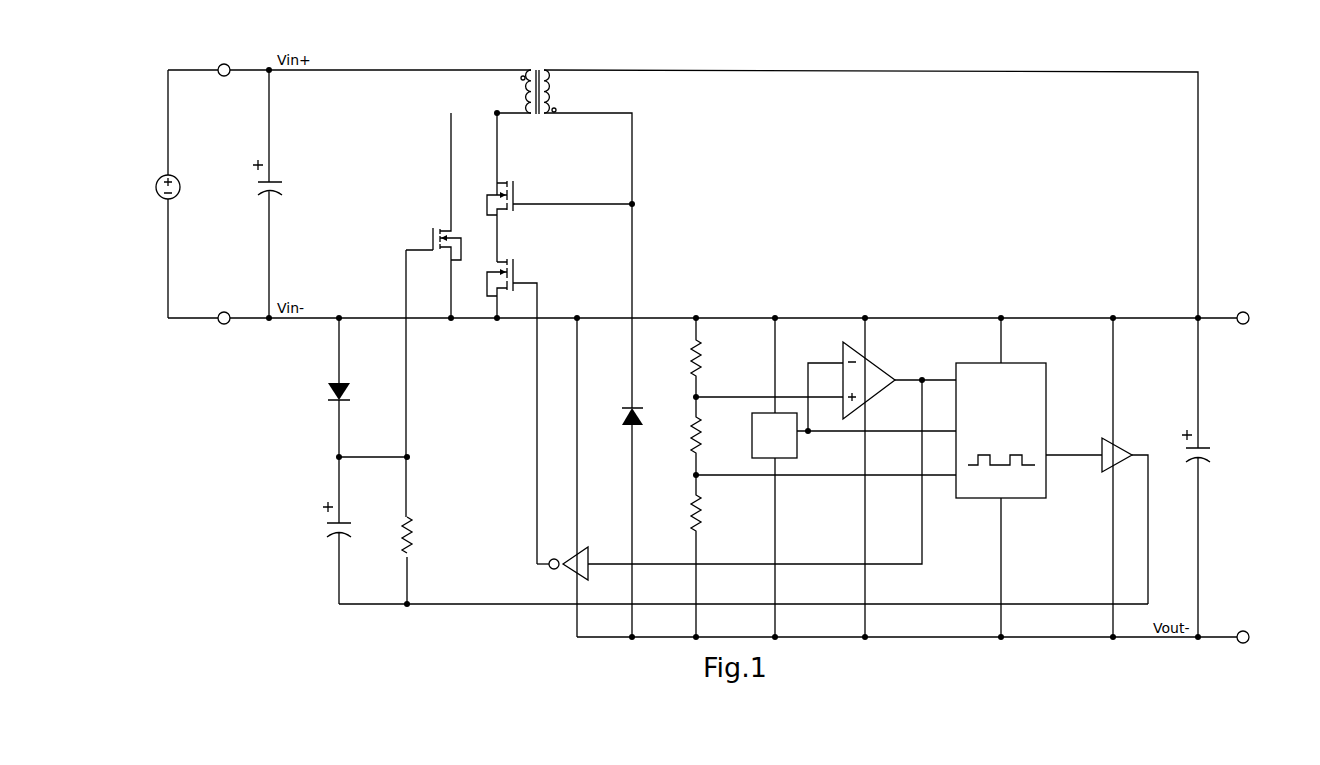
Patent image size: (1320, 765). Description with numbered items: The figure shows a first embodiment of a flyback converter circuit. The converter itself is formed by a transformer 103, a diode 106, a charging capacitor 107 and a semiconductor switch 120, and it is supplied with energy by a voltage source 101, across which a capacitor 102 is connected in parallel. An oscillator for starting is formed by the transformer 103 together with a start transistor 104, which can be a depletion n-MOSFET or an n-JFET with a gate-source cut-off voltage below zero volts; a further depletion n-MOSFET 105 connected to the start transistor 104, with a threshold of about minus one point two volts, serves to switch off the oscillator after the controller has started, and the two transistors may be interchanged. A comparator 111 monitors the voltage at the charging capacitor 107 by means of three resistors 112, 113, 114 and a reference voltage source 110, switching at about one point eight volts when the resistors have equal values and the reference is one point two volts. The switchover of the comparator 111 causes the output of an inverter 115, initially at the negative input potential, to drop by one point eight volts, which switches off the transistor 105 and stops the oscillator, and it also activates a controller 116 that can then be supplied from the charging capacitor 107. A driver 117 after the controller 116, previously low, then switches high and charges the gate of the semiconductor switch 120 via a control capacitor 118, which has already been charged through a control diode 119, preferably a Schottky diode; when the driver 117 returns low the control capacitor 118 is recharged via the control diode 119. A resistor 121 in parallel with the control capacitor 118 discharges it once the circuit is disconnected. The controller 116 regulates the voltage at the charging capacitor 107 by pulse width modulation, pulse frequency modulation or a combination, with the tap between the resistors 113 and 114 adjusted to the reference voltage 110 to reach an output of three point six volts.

The voltage source 101 is at (179, 195).
The capacitor 102 is at (281, 194).
The transformer 103 is at (564, 137).
The start transistor 104 is at (559, 187).
The further depletion n-MOSFET 105 is at (512, 411).
The diode 106 is at (644, 420).
The charging capacitor 107 is at (1207, 477).
The reference voltage source 110 is at (854, 477).
The comparator 111 is at (772, 453).
The first resistor 112 is at (710, 357).
The second resistor 113 is at (710, 436).
The third resistor 114 is at (710, 556).
The inverter 115 is at (580, 570).
The controller 116 is at (1029, 477).
The driver 117 is at (1125, 521).
The control capacitor 118 is at (347, 530).
The control diode 119 is at (350, 387).
The semiconductor switch 120 is at (433, 315).
The resistor 121 is at (424, 560).